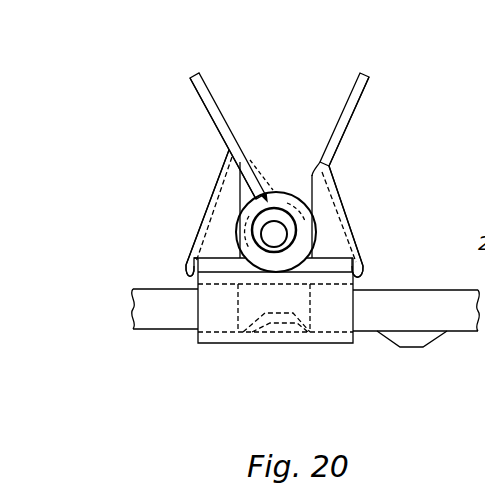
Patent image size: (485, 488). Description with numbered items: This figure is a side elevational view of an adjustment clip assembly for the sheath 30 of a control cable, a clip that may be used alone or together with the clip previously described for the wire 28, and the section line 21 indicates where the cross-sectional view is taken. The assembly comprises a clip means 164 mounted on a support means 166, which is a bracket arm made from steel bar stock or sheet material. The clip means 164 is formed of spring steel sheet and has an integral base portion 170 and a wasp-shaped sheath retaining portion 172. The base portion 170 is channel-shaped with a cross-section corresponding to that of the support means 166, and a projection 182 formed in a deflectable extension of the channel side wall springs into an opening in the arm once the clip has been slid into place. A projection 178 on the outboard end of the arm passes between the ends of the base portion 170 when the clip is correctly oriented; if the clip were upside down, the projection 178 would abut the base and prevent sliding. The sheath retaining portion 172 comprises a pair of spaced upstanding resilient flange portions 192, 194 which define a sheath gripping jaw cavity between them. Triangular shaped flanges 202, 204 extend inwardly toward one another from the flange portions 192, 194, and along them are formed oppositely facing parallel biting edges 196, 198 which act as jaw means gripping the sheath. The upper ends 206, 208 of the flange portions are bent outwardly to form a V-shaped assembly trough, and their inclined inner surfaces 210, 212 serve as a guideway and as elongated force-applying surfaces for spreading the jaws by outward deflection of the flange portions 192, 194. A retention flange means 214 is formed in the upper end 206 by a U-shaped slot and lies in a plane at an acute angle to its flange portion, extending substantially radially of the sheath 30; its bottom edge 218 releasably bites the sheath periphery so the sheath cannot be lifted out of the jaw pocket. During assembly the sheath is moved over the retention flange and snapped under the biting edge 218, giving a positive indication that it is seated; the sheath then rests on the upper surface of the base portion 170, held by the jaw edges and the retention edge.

The section line 21- 21 is at (277, 100).
The wire 28 is at (291, 233).
The sheath 30 is at (286, 186).
The clip means 164 is at (221, 161).
The support means 166 is at (165, 331).
The base portion 170 is at (350, 349).
The sheath retaining portion 172 is at (333, 158).
The projection 178 is at (418, 349).
The projection 182 is at (402, 484).
The flange portion 192 is at (193, 233).
The flange portion 194 is at (358, 245).
The biting edge 196 is at (186, 257).
The biting edge 198 is at (304, 190).
The triangular shaped flange 202 is at (216, 205).
The triangular shaped flange 204 is at (332, 253).
The upper end 206 is at (197, 103).
The upper end 208 is at (363, 93).
The inclined inner surface 210 is at (214, 98).
The inclined inner surface 212 is at (349, 94).
The retention flange means 214 is at (243, 156).
The bottom edge 218 is at (252, 161).